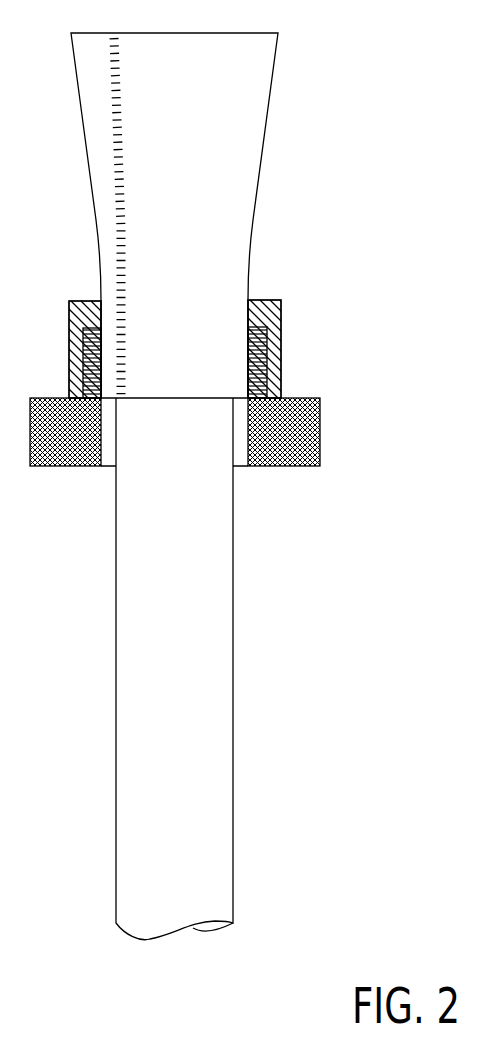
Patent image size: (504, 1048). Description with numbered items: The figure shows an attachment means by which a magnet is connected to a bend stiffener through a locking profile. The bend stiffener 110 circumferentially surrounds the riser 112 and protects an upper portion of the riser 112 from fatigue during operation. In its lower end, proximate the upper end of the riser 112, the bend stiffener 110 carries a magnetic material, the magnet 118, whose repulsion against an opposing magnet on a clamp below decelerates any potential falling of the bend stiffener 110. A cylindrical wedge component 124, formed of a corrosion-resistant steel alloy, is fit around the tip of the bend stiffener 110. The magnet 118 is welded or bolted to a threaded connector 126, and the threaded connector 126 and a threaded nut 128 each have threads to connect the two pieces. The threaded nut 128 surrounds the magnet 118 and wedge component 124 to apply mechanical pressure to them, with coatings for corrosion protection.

The bend stiffener 110 is at (263, 155).
The riser 112 is at (233, 669).
The magnet 118 is at (320, 466).
The cylindrical wedge component 124 is at (258, 300).
The threaded connector 126 is at (280, 382).
The threaded nut 128 is at (280, 353).